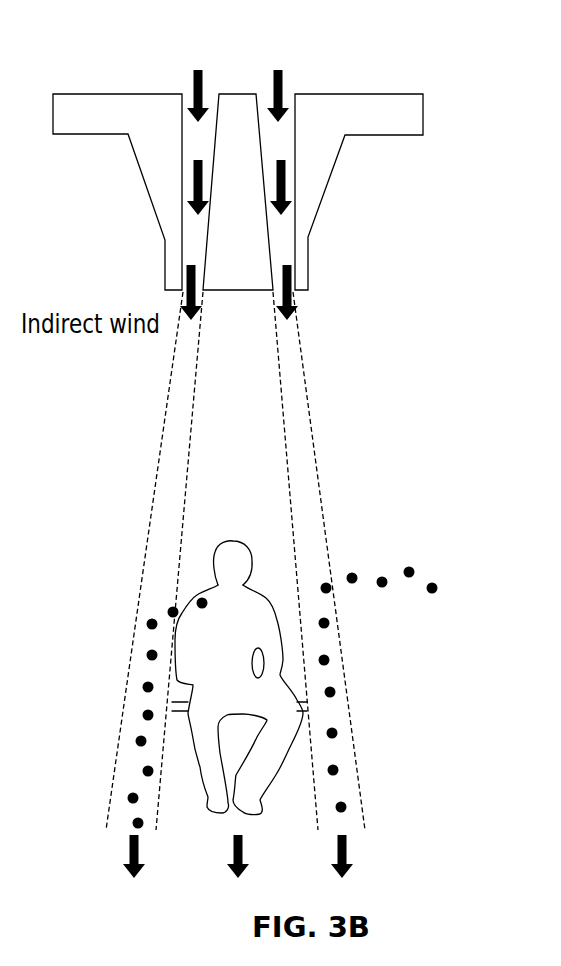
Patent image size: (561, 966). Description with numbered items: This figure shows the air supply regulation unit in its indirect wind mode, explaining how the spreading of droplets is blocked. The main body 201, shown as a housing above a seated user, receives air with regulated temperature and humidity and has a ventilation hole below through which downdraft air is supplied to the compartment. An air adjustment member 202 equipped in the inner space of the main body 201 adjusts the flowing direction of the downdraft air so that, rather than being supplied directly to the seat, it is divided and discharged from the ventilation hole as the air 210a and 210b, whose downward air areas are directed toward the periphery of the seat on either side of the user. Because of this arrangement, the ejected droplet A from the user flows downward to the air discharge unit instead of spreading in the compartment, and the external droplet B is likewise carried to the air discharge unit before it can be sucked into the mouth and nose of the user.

The main body 201 is at (352, 104).
The air adjustment member 202 is at (236, 104).
The air 210a is at (138, 469).
The air 210b is at (337, 469).
The ejected droplet A is at (123, 740).
The external droplet B is at (455, 587).